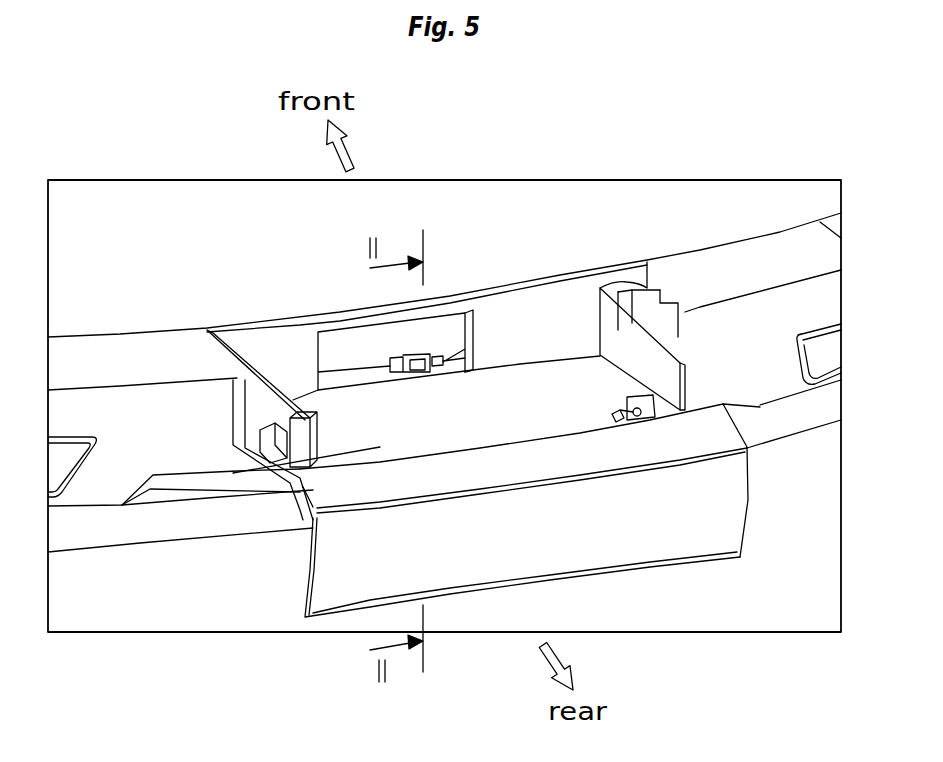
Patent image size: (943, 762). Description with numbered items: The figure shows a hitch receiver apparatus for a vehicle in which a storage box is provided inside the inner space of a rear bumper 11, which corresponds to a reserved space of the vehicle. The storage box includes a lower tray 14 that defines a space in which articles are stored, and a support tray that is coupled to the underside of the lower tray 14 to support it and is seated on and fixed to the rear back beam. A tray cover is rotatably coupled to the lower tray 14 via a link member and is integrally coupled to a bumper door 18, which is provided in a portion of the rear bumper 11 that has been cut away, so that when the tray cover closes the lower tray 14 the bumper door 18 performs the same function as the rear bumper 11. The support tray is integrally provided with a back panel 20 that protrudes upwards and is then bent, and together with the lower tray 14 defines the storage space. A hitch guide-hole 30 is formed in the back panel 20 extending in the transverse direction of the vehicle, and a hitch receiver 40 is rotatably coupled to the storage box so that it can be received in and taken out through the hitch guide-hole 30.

The rear bumper 11 is at (108, 490).
The lower tray 14 is at (573, 390).
The bumper door 18 is at (627, 532).
The back panel 20 is at (521, 322).
The hitch guide-hole 30 is at (320, 378).
The hitch receiver 40 is at (332, 352).